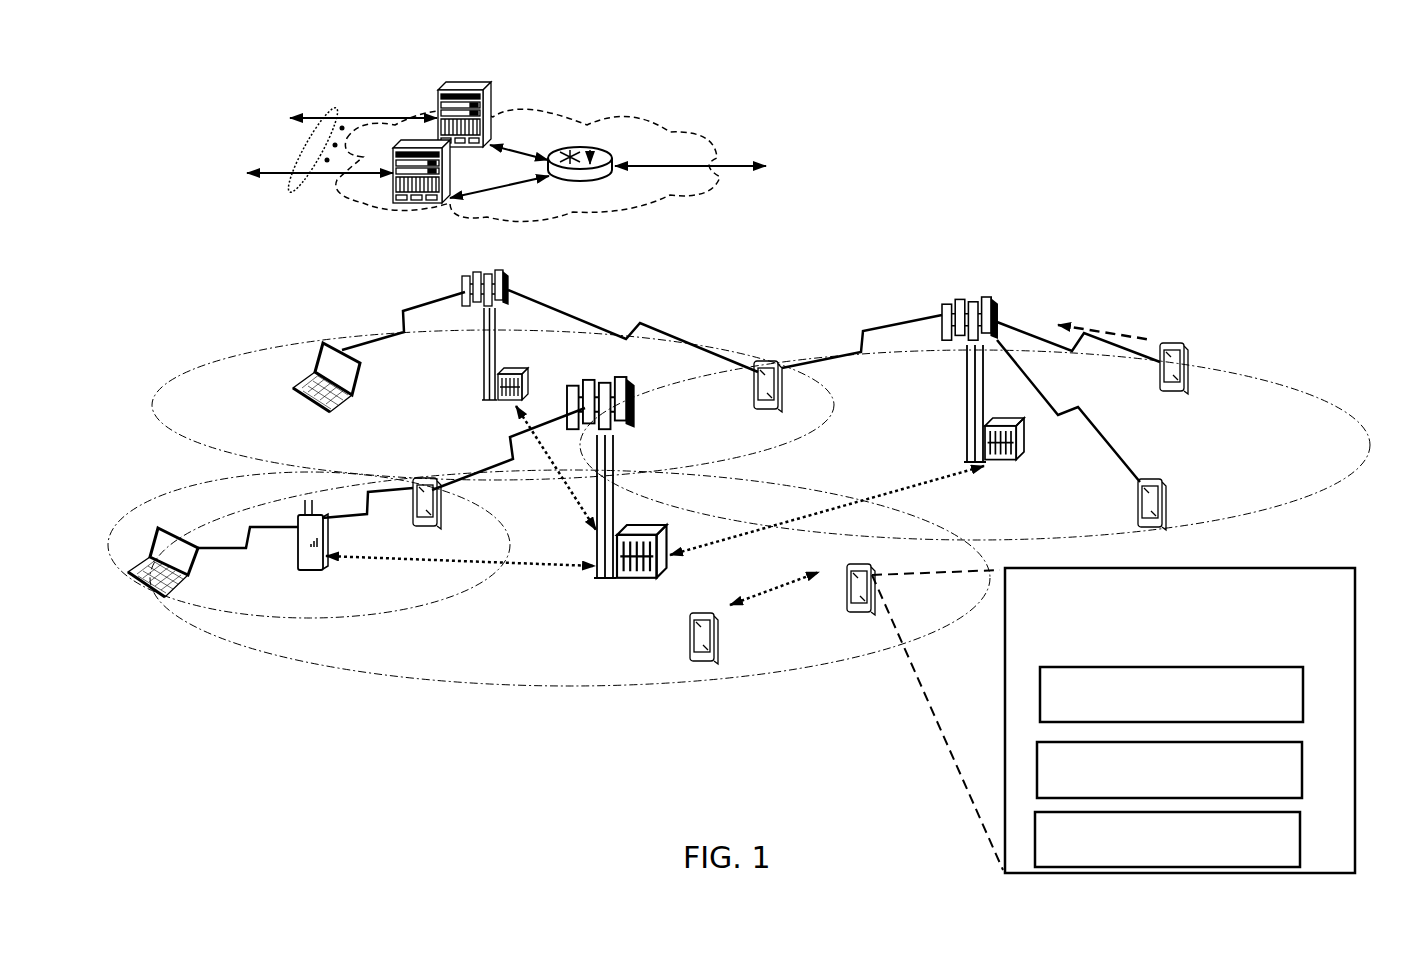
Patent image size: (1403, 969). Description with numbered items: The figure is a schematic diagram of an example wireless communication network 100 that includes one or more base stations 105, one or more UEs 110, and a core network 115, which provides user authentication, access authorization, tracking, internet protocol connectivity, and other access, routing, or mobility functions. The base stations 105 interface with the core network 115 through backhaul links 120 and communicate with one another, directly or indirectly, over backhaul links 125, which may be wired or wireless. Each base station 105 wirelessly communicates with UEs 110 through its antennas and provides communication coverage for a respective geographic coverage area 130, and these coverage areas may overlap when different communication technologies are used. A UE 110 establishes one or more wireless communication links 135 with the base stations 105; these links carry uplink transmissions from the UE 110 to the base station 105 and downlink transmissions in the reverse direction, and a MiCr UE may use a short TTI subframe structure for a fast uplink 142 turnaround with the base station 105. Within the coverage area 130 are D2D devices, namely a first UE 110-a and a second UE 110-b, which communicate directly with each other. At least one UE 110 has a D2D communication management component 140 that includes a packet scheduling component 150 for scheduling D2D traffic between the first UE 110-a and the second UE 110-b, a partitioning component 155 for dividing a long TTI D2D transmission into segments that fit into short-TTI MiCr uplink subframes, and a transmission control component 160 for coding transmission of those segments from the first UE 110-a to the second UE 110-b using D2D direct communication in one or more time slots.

The wireless communication network 100 is at (236, 92).
The base station 105 is at (490, 370).
The UE 110 is at (343, 400).
The first UE 110-a is at (848, 588).
The second UE 110-b is at (691, 636).
The core network 115 is at (615, 214).
The backhaul link 120 is at (302, 184).
The backhaul link 125 is at (574, 492).
The geographic coverage area 130 is at (210, 448).
The wireless communication link 135 is at (404, 318).
The D2D communication management component 140 is at (1180, 720).
The uplink 142 is at (1110, 330).
The packet scheduling component 150 is at (1171, 694).
The partitioning component 155 is at (1169, 770).
The transmission control component 160 is at (1167, 839).